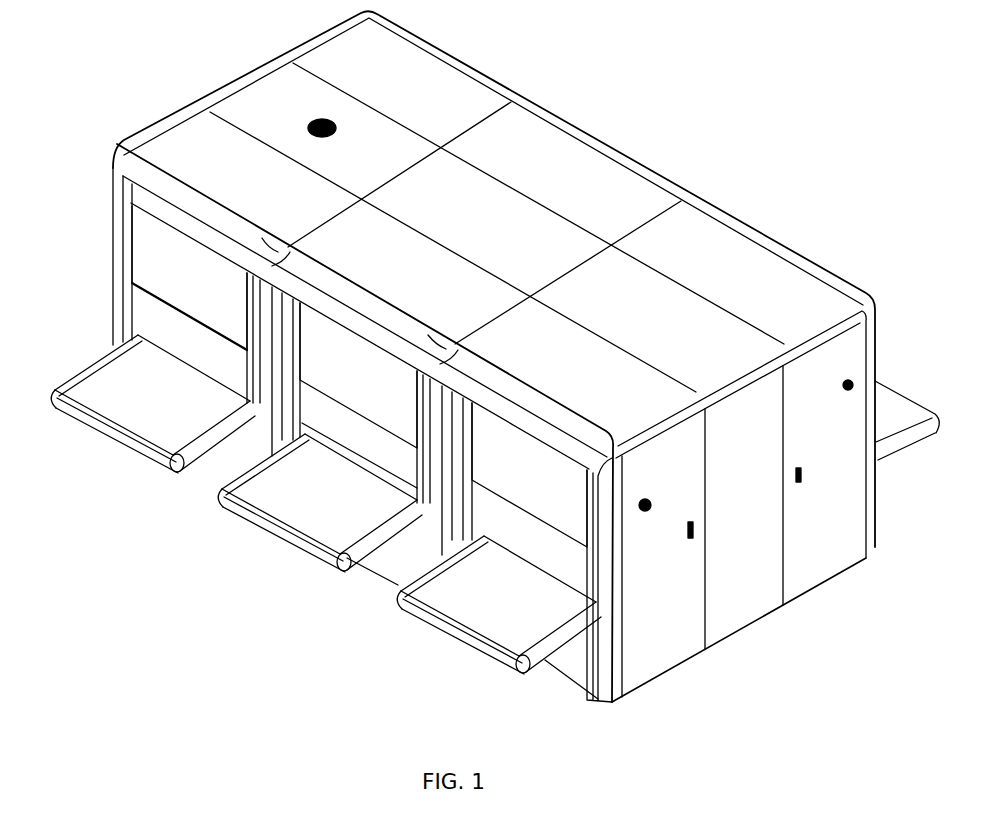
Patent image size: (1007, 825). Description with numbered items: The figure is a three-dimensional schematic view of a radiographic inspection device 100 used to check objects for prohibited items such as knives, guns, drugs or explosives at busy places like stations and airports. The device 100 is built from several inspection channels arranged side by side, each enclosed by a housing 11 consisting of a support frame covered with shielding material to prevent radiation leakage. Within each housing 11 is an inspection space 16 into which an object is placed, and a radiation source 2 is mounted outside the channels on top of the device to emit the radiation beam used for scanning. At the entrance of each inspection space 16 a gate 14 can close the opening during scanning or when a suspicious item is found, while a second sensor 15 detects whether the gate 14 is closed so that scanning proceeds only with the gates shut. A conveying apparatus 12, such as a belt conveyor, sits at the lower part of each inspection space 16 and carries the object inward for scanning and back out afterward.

The radiographic inspection device 100 is at (486, 369).
The radiation source 2 is at (315, 120).
The housing 11 is at (743, 573).
The conveying apparatus 12 is at (115, 402).
The gate 14 is at (157, 267).
The second sensor 15 is at (130, 290).
The inspection space 16 is at (198, 350).